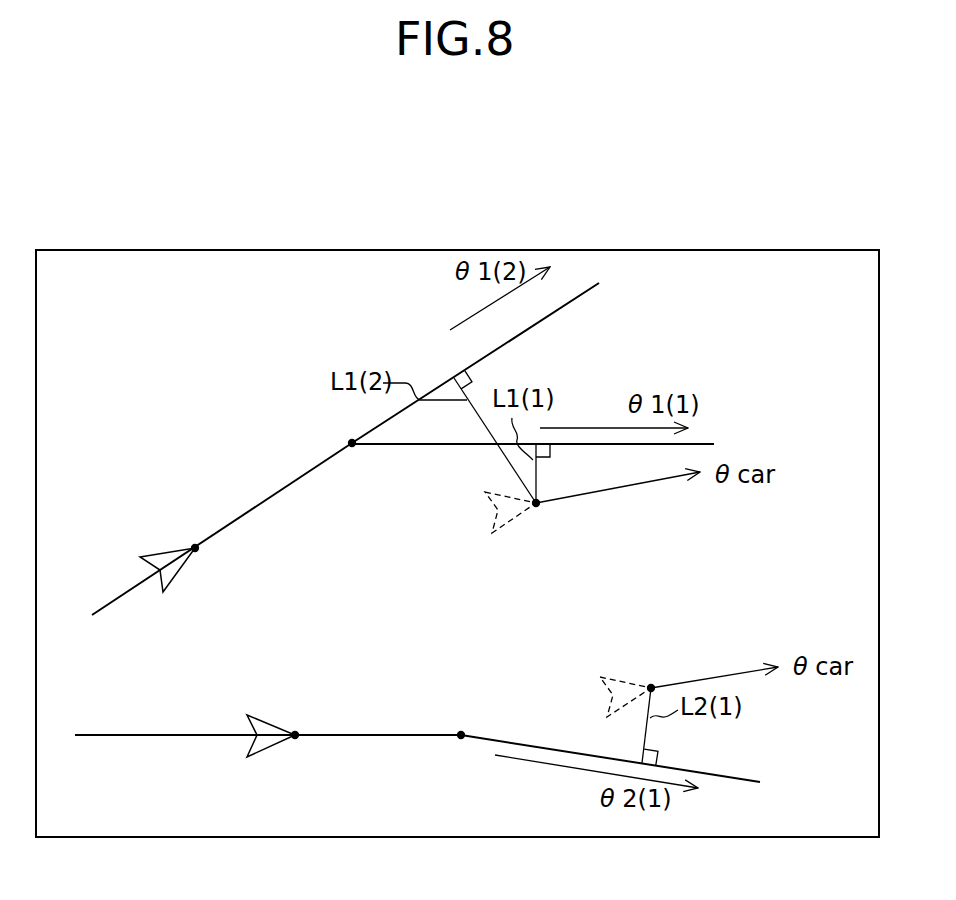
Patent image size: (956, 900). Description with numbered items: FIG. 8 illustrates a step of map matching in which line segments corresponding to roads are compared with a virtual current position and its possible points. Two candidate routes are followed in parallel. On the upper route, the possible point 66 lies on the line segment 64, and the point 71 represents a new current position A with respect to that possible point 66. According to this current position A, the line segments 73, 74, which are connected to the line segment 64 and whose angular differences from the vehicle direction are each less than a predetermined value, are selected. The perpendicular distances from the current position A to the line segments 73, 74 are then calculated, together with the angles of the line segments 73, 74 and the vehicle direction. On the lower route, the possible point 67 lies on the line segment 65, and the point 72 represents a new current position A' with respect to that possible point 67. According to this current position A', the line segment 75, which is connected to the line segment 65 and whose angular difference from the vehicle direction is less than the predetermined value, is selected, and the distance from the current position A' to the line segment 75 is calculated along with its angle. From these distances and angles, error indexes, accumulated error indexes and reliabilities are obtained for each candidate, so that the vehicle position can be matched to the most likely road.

The line segment 64 is at (128, 591).
The line segment 65 is at (177, 737).
The possible point 66 is at (194, 545).
The possible point 67 is at (298, 740).
The point 71 is at (540, 507).
The point 72 is at (654, 685).
The line segment 73 is at (417, 447).
The line segment 74 is at (582, 295).
The line segment 75 is at (745, 777).